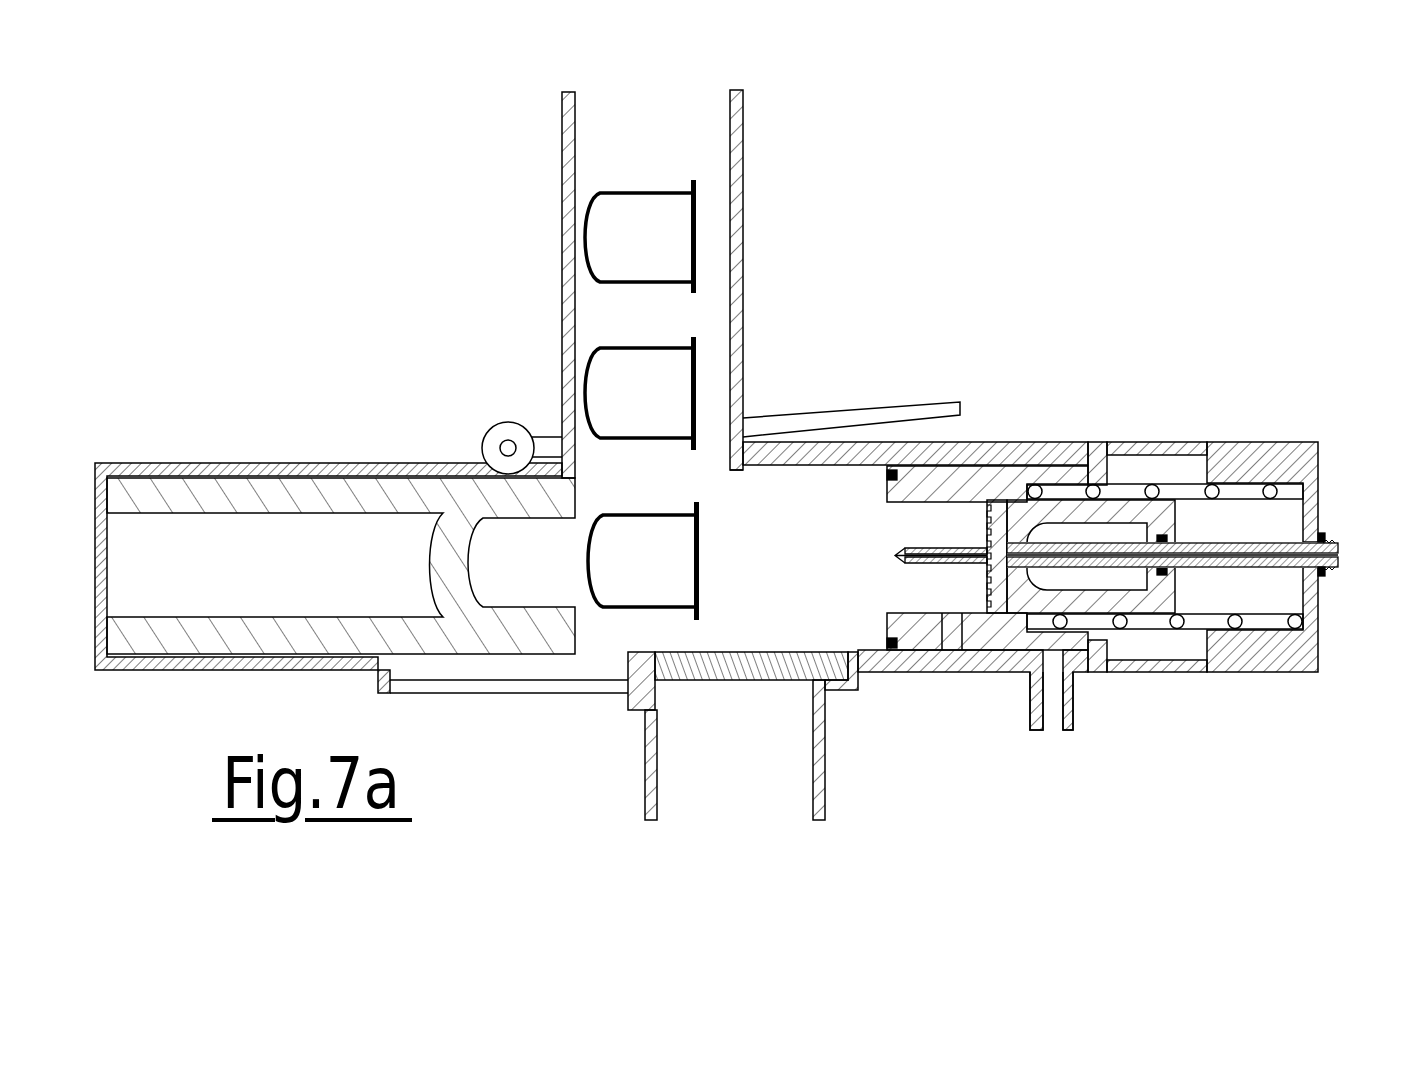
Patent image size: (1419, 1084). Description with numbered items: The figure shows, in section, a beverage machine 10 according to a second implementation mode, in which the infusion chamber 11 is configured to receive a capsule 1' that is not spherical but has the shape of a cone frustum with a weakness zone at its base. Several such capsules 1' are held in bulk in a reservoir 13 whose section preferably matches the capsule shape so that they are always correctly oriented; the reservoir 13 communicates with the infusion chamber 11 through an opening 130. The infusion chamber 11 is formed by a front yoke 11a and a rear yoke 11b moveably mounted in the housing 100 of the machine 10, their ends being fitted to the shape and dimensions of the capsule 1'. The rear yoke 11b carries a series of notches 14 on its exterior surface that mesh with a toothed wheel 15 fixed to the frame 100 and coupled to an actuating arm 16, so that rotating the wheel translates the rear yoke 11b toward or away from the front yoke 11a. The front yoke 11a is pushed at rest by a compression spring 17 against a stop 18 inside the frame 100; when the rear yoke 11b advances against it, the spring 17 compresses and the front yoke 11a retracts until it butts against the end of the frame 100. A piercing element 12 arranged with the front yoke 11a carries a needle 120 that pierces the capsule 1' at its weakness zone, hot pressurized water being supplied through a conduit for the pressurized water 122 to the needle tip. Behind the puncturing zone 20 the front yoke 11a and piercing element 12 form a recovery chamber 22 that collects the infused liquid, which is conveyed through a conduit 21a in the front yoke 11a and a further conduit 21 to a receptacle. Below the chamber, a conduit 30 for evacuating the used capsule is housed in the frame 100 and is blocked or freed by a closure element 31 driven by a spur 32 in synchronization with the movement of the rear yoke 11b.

The capsule 1' is at (641, 400).
The machine 10 is at (990, 192).
The infusion chamber 11 is at (776, 587).
The front yoke 11a is at (987, 478).
The rear yoke 11b is at (298, 495).
The piercing element 12 is at (1087, 559).
The reservoir 13 is at (741, 136).
The notches 14 is at (418, 477).
The toothed wheel 15 is at (497, 428).
The actuating arm 16 is at (898, 406).
The compression spring 17 is at (1148, 482).
The stop 18 is at (1088, 458).
The puncturing zone 20 is at (985, 573).
The conduit 21 is at (1068, 725).
The conduit 21a is at (950, 637).
The recovery chamber 22 is at (1093, 578).
The conduit for evacuating the used capsule 30 is at (818, 795).
The closure element 31 is at (822, 665).
The spur 32 is at (628, 712).
The housing 100 is at (1320, 505).
The needle 120 is at (925, 550).
The conduit for the pressurized water 122 is at (1235, 553).
The opening 130 is at (708, 458).